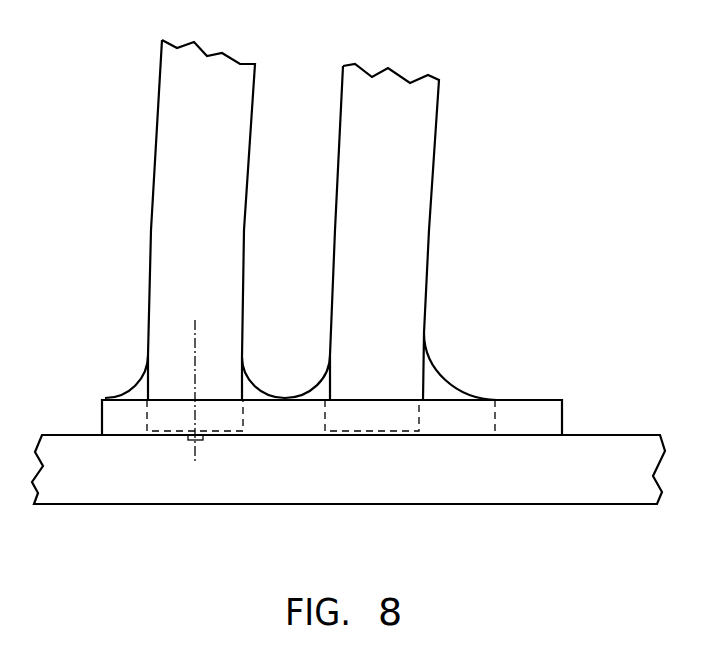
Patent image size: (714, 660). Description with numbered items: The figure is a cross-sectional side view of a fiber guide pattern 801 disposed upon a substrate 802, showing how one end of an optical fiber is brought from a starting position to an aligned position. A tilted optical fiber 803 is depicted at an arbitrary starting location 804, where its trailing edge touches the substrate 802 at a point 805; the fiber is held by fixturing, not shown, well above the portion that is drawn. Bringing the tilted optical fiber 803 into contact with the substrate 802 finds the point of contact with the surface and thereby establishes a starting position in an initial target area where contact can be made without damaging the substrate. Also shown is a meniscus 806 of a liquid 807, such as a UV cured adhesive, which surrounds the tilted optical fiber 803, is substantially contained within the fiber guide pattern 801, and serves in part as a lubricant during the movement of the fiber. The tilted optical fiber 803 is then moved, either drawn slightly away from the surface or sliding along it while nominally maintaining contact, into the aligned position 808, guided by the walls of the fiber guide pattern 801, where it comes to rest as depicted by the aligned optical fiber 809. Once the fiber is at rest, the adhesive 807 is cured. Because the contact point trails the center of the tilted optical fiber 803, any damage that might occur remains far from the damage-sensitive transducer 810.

The fiber guide pattern 801 is at (543, 400).
The substrate 802 is at (600, 488).
The tilted optical fiber 803 is at (420, 163).
The arbitrary starting location 804 is at (376, 510).
The point of contact 805 is at (418, 437).
The meniscus 806 is at (438, 385).
The liquid 807 is at (315, 390).
The aligned position 808 is at (250, 506).
The aligned optical fiber 809 is at (170, 160).
The transducer 810 is at (193, 440).